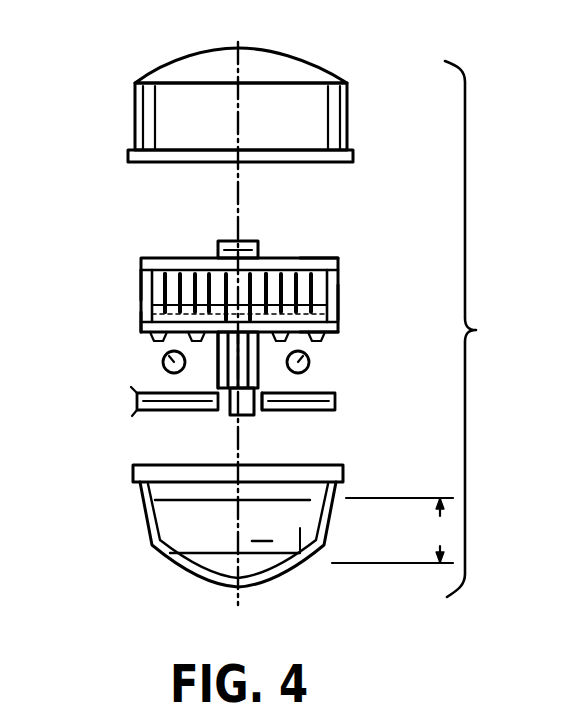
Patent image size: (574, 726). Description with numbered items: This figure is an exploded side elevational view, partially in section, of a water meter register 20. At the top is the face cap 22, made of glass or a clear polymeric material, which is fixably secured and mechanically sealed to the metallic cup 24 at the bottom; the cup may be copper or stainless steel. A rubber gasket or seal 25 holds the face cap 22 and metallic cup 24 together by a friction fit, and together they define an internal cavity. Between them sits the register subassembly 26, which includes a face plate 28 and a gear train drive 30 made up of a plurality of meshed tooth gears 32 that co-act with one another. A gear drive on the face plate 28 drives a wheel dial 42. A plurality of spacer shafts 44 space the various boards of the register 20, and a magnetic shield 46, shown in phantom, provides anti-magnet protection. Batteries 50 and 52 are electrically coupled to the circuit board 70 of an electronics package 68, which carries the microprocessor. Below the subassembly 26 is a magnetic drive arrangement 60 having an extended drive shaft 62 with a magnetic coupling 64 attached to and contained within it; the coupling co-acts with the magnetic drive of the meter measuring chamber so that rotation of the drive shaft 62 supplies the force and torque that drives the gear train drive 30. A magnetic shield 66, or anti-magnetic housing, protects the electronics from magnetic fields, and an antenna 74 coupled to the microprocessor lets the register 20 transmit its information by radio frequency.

The register 20 is at (485, 329).
The face cap 22 is at (302, 77).
The metallic cup 24 is at (326, 527).
The rubber gasket or seal 25 is at (215, 363).
The register subassembly 26 is at (136, 261).
The face plate 28 is at (328, 258).
The gear train drive 30 is at (272, 302).
The gears 32 is at (171, 258).
The wheel dial 42 is at (221, 241).
The spacer shafts 44 is at (141, 323).
The magnetic shield 46 is at (126, 471).
The battery 50 is at (160, 376).
The battery 52 is at (311, 357).
The magnetic drive arrangement 60 is at (318, 387).
The drive shaft 62 is at (212, 411).
The magnetic coupling 64 is at (241, 417).
The magnetic shield 66 is at (262, 411).
The electronics package 68 is at (340, 310).
The circuit board 70 is at (332, 331).
The antenna 74 is at (141, 286).